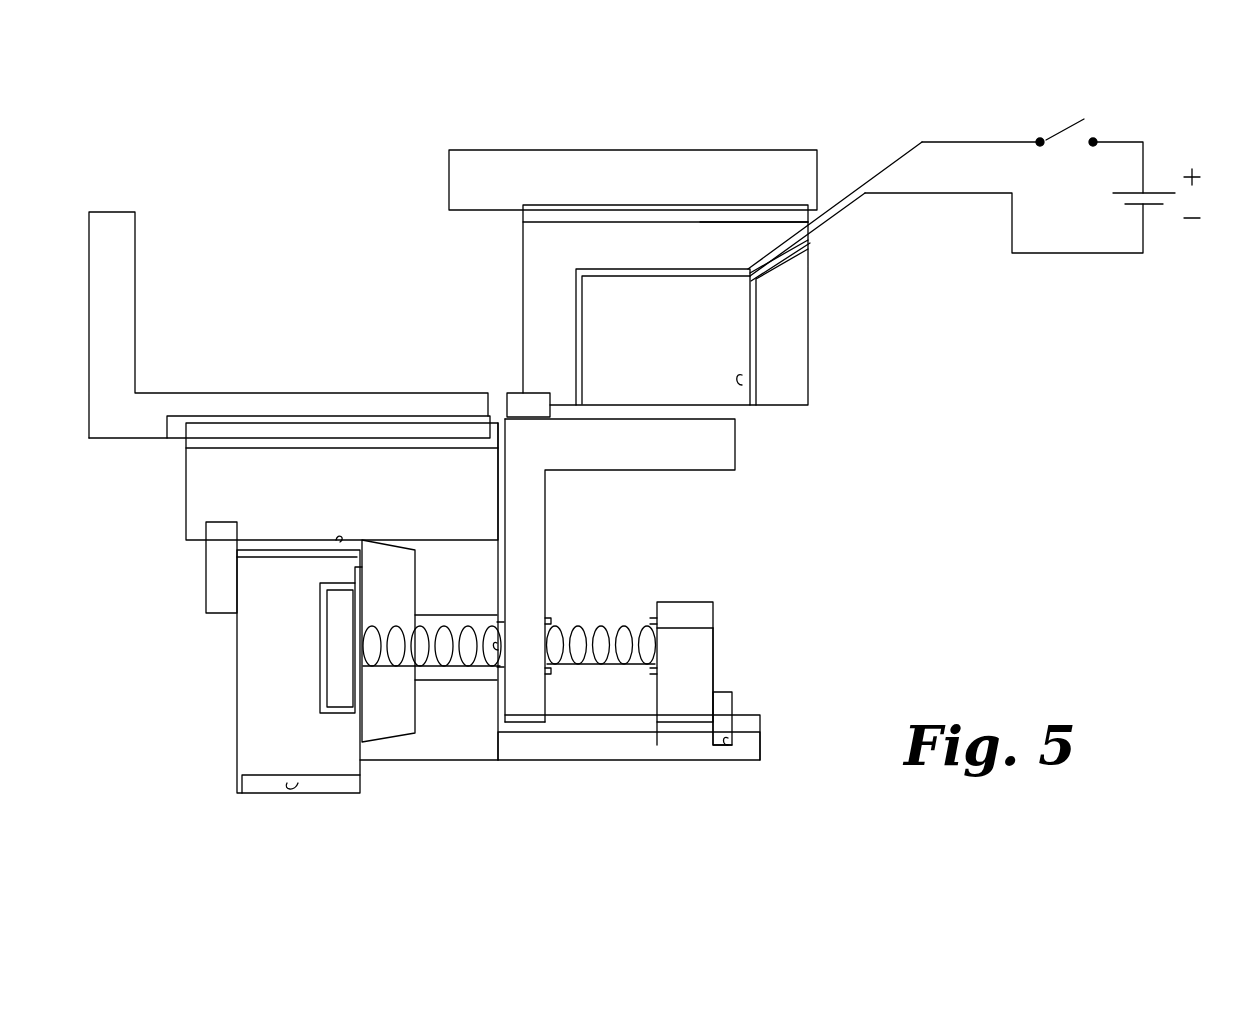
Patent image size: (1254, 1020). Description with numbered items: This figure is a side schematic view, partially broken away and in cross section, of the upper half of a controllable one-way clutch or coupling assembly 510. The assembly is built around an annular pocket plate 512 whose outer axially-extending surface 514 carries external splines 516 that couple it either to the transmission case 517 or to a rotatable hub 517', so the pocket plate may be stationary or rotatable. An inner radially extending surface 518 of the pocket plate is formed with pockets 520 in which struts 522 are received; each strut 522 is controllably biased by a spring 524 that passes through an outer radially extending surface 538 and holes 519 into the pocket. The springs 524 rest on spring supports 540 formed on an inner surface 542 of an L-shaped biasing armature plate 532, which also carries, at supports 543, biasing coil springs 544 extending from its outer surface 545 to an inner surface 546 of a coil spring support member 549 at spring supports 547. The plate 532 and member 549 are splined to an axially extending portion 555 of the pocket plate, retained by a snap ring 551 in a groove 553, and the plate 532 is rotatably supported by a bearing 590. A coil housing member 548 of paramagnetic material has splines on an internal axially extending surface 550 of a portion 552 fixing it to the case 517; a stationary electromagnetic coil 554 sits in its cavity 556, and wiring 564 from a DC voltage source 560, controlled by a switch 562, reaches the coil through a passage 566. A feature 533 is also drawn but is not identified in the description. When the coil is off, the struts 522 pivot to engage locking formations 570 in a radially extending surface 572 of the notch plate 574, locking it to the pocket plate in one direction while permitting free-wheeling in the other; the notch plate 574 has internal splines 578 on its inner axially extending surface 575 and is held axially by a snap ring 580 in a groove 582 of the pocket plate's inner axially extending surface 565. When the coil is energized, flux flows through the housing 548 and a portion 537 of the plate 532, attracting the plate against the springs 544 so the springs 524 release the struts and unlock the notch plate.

The controllable one-way clutch or coupling assembly 510 is at (850, 556).
The pocket plate 512 is at (457, 766).
The outer axially-extending surface 514 is at (232, 447).
The external splines 516 is at (282, 416).
The transmission case 517 is at (633, 129).
The rotatable hub 517' is at (288, 325).
The inner radially extending surface 518 is at (350, 540).
The holes 519 is at (457, 615).
The pockets 520 is at (390, 727).
The strut 522 is at (338, 698).
The spring 524 is at (423, 667).
The biasing armature plate 532 is at (736, 472).
The contact rail 533 is at (763, 205).
The portion of the armature plate 537 is at (687, 470).
The outer radially extending surface 538 is at (505, 525).
The spring supports 540 is at (500, 660).
The inner surface 542 is at (500, 488).
The supports 543 is at (565, 633).
The biasing coil springs 544 is at (600, 627).
The outer surface 545 is at (547, 550).
The inner surface 546 is at (653, 688).
The spring supports 547 is at (713, 627).
The coil housing member 548 is at (809, 351).
The coil spring support member 549 is at (727, 660).
The internal axially extending surface 550 is at (545, 215).
The snap ring 551 is at (732, 705).
The portion of the coil housing member 552 is at (658, 245).
The groove 553 is at (728, 738).
The electromagnetic coil 554 is at (755, 335).
The axially extending portion 555 is at (680, 763).
The cavity 556 is at (748, 372).
The DC voltage source 560 is at (1162, 173).
The switch 562 is at (1087, 130).
The wiring 564 is at (887, 168).
The inner axially extending surface 565 is at (340, 542).
The passage 566 is at (783, 247).
The locking formations 570 is at (343, 578).
The radially extending surface 572 is at (328, 643).
The notch plate 574 is at (240, 763).
The inner axially extending surface 575 is at (287, 783).
The internal splines 578 is at (307, 793).
The snap ring 580 is at (203, 587).
The groove 582 is at (223, 523).
The bearing 590 is at (527, 405).